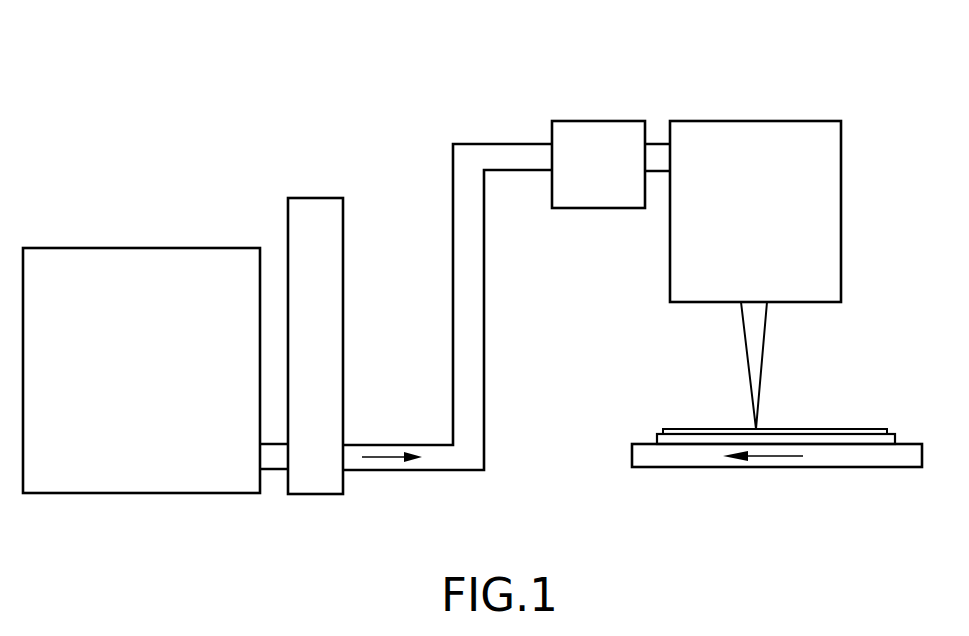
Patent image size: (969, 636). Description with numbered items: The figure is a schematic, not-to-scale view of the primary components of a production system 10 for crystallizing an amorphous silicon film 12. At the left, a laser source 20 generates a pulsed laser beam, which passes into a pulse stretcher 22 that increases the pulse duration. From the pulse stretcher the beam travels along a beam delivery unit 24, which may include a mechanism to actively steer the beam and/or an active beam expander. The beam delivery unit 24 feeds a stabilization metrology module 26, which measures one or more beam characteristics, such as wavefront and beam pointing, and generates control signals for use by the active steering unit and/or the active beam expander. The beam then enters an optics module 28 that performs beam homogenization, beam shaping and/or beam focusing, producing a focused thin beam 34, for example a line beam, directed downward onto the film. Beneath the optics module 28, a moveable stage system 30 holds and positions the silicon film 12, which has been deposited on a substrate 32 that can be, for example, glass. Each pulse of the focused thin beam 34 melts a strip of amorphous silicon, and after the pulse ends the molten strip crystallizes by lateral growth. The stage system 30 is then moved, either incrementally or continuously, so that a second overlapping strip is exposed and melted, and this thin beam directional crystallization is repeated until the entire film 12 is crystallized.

The production system 10 is at (372, 180).
The amorphous silicon film 12 is at (877, 430).
The laser source 20 is at (107, 248).
The pulse stretcher 22 is at (343, 311).
The beam delivery unit 24 is at (484, 338).
The stabilization metrology module 26 is at (585, 208).
The optics module 28 is at (777, 121).
The moveable stage system 30 is at (673, 460).
The substrate 32 is at (657, 440).
The focused thin beam 34 is at (765, 336).